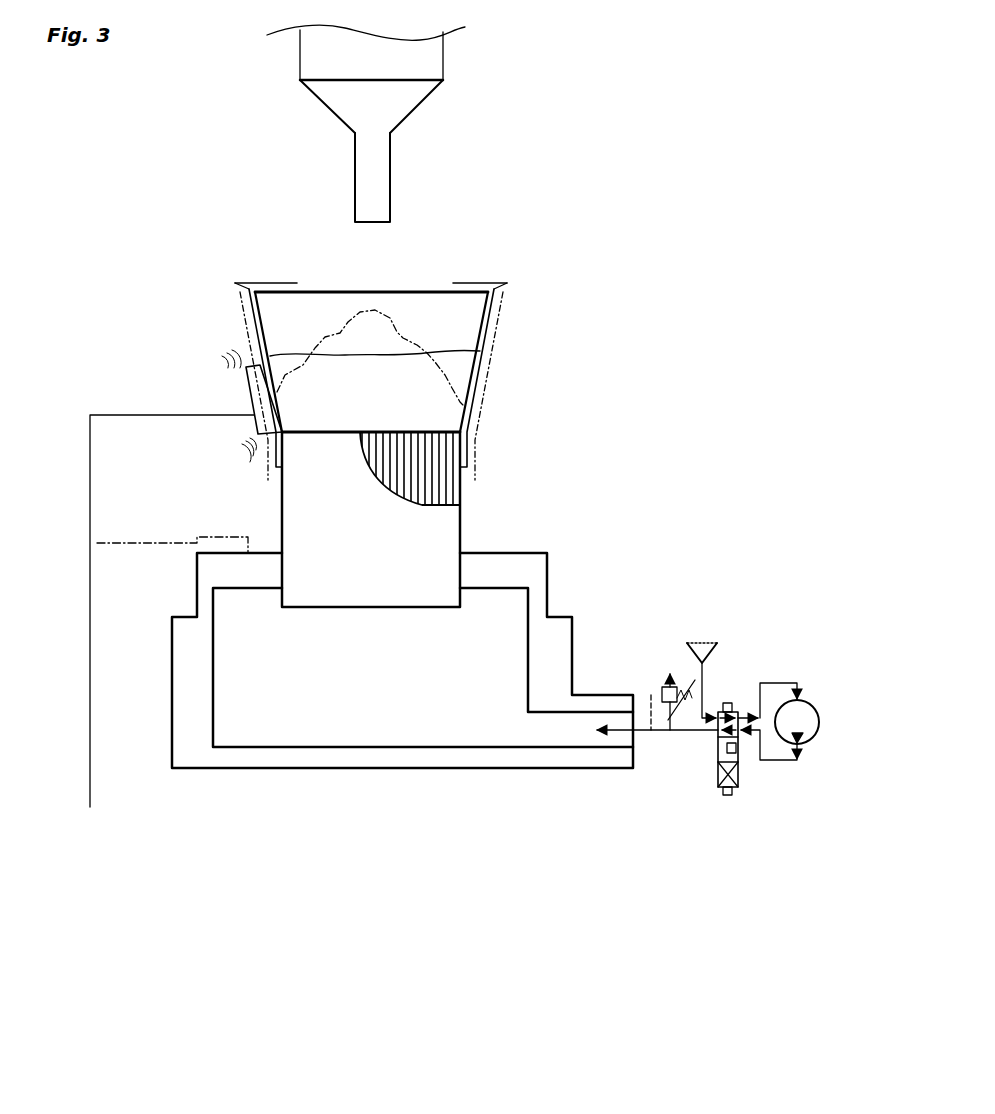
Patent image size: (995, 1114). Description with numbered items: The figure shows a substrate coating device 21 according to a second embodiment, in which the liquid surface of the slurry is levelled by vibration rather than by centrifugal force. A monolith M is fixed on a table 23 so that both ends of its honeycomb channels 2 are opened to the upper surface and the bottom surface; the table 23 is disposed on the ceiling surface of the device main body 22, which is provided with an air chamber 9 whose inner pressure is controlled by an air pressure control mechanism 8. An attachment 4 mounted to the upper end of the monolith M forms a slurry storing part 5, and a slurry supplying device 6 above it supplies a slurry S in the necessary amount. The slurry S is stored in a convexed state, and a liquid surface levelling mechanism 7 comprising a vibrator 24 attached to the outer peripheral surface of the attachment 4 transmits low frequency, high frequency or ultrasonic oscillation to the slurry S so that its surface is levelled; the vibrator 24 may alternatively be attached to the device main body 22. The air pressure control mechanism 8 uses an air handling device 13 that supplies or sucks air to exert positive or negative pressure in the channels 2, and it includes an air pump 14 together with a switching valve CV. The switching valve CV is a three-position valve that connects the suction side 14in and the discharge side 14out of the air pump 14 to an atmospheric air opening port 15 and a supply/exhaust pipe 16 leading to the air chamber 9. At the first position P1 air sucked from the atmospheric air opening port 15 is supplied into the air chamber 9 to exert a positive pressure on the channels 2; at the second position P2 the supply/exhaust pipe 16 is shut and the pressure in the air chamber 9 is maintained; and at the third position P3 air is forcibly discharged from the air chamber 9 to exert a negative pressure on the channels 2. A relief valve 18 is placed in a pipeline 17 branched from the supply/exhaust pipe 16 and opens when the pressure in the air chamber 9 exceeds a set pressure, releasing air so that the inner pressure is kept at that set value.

The honeycomb channels 2 is at (423, 472).
The attachment 4 is at (490, 340).
The slurry storing part 5 is at (332, 305).
The slurry supplying device 6 is at (415, 62).
The liquid surface levelling mechanism 7 is at (226, 380).
The air pressure control mechanism 8 is at (777, 607).
The air chamber 9 is at (362, 707).
The air handling device 13 is at (537, 880).
The air pump 14 is at (811, 763).
The suction side 14in is at (787, 668).
The discharge side 14out is at (783, 762).
The atmospheric air opening port 15 is at (703, 712).
The supply/exhaust pipe 16 is at (685, 730).
The pipeline 17 is at (695, 680).
The relief valve 18 is at (662, 688).
The substrate coating device 21 is at (597, 355).
The device main body 22 is at (367, 768).
The table 23 is at (272, 553).
The vibrator 24 is at (250, 393).
The slurry S is at (378, 380).
The monolith M is at (397, 535).
The first position P1 is at (717, 732).
The second position P2 is at (717, 745).
The third position P3 is at (733, 787).
The switching valve CV is at (728, 795).